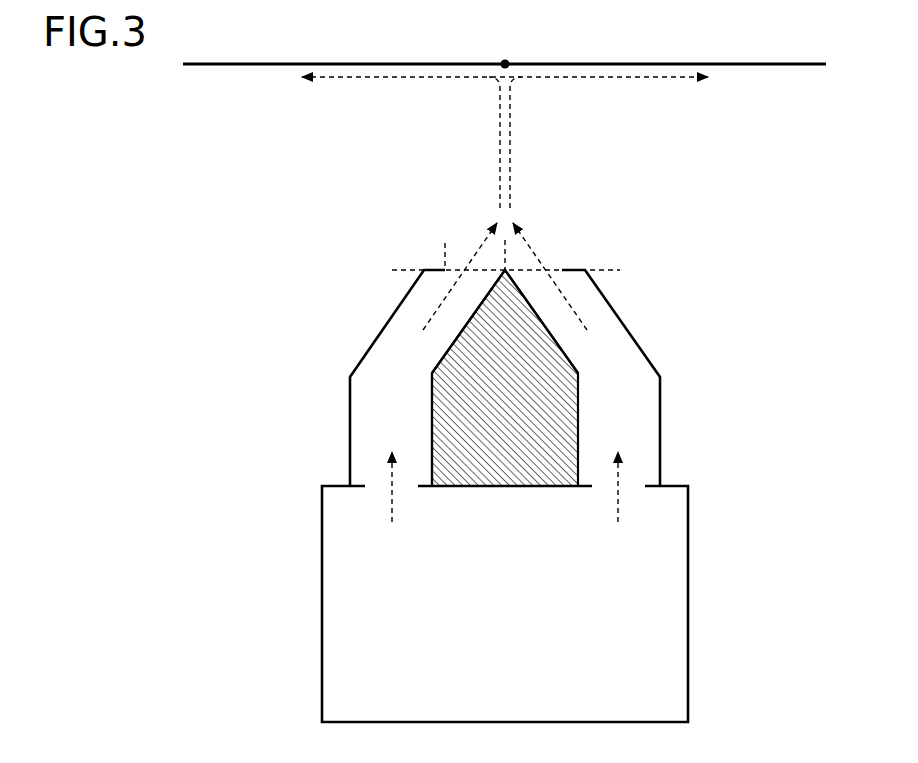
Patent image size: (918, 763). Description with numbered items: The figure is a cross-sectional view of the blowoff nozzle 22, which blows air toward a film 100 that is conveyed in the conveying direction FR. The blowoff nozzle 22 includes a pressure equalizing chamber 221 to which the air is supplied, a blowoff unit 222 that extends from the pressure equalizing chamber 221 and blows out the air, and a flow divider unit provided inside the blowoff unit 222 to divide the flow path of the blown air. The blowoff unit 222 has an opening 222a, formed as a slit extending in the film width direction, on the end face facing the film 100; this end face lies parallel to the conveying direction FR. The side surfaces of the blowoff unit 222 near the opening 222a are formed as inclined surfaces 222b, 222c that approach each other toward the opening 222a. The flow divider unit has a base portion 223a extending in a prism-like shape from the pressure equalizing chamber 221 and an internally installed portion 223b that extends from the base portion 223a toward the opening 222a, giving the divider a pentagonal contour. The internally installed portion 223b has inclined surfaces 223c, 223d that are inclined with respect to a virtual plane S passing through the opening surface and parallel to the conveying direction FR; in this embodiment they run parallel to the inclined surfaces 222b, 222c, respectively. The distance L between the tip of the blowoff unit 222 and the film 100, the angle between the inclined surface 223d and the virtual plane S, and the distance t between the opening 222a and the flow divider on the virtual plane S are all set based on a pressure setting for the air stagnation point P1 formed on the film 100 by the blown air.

The film 100 is at (752, 63).
The blowoff nozzle 22 is at (515, 349).
The pressure equalizing chamber 221 is at (665, 604).
The blowoff unit 222 is at (652, 357).
The opening 222a is at (559, 266).
The inclined surface 222b is at (393, 315).
The inclined surface 222c is at (618, 315).
The base portion 223a is at (446, 427).
The internally installed portion 223b is at (462, 340).
The inclined surface 223c is at (443, 357).
The inclined surface 223d is at (560, 347).
The air stagnation point P1 is at (508, 62).
The virtual plane S is at (402, 268).
The distance L is at (435, 64).
The distance t is at (505, 253).
The conveying direction FR is at (532, 40).